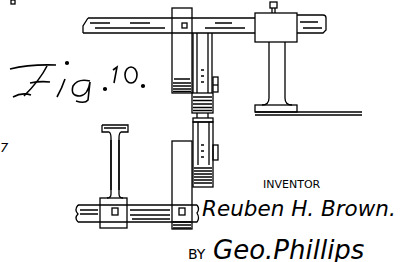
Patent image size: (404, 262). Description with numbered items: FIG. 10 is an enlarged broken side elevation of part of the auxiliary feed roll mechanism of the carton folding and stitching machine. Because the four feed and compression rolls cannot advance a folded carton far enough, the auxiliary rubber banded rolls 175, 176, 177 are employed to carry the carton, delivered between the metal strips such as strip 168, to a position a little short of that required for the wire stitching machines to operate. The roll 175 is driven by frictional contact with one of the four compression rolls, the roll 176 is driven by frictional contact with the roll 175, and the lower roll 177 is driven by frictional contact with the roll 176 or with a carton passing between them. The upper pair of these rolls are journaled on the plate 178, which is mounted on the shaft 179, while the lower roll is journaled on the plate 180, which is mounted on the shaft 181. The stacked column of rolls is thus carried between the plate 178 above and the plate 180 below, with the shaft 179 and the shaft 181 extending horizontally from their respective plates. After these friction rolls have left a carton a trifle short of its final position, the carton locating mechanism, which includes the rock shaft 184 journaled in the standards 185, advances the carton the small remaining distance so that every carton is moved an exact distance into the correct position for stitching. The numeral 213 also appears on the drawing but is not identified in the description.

The metal strip 168 is at (104, 127).
The auxiliary rubber banded roll 175 is at (220, 50).
The auxiliary rubber banded roll 176 is at (213, 98).
The lower auxiliary rubber banded roll 177 is at (215, 146).
The plate 178 is at (172, 93).
The shaft 179 is at (323, 33).
The plate 180 is at (172, 161).
The shaft 181 is at (135, 222).
The web 213 is at (111, 173).
The rock shaft 184 is at (13, 225).
The standards 185 is at (13, 254).